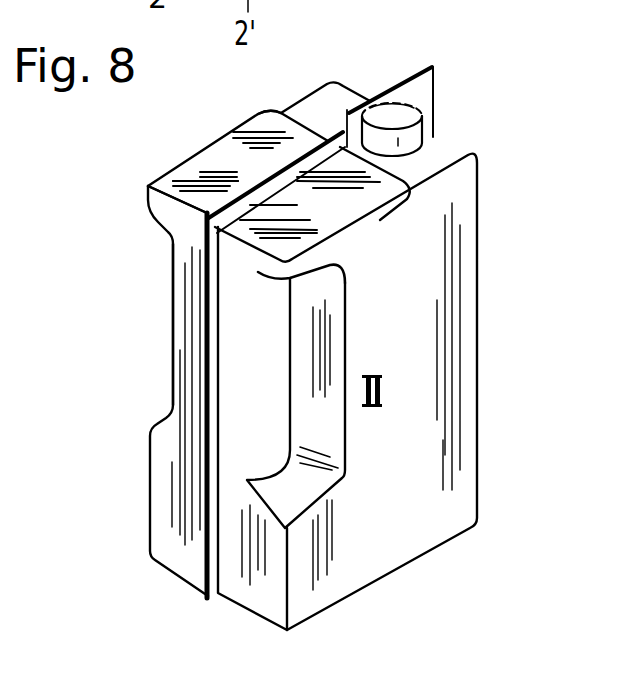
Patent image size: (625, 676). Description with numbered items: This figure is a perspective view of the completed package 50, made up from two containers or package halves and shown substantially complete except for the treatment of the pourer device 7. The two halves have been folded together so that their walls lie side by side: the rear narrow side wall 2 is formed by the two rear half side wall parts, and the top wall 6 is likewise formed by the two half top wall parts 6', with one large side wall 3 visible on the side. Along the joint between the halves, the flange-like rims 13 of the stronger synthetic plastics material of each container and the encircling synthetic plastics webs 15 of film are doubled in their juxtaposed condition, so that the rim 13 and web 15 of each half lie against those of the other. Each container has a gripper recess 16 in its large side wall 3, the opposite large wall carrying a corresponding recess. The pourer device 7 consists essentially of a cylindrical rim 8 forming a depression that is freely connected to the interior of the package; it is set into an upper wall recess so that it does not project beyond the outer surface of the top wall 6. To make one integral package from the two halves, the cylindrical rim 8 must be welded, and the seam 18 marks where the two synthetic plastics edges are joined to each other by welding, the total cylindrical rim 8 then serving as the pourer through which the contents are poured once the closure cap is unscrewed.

The rear narrow side wall 2 is at (245, 360).
The large side wall 3 is at (413, 360).
The top wall 6 is at (136, 170).
The half top wall parts 6' is at (153, 173).
The pourer device 7 is at (412, 116).
The cylindrical rim 8 is at (403, 143).
The flange-like rim 13 is at (277, 140).
The encircling web 15 is at (210, 272).
The gripper recess 16 is at (363, 548).
The seam 18 is at (322, 130).
The package 50 is at (337, 80).